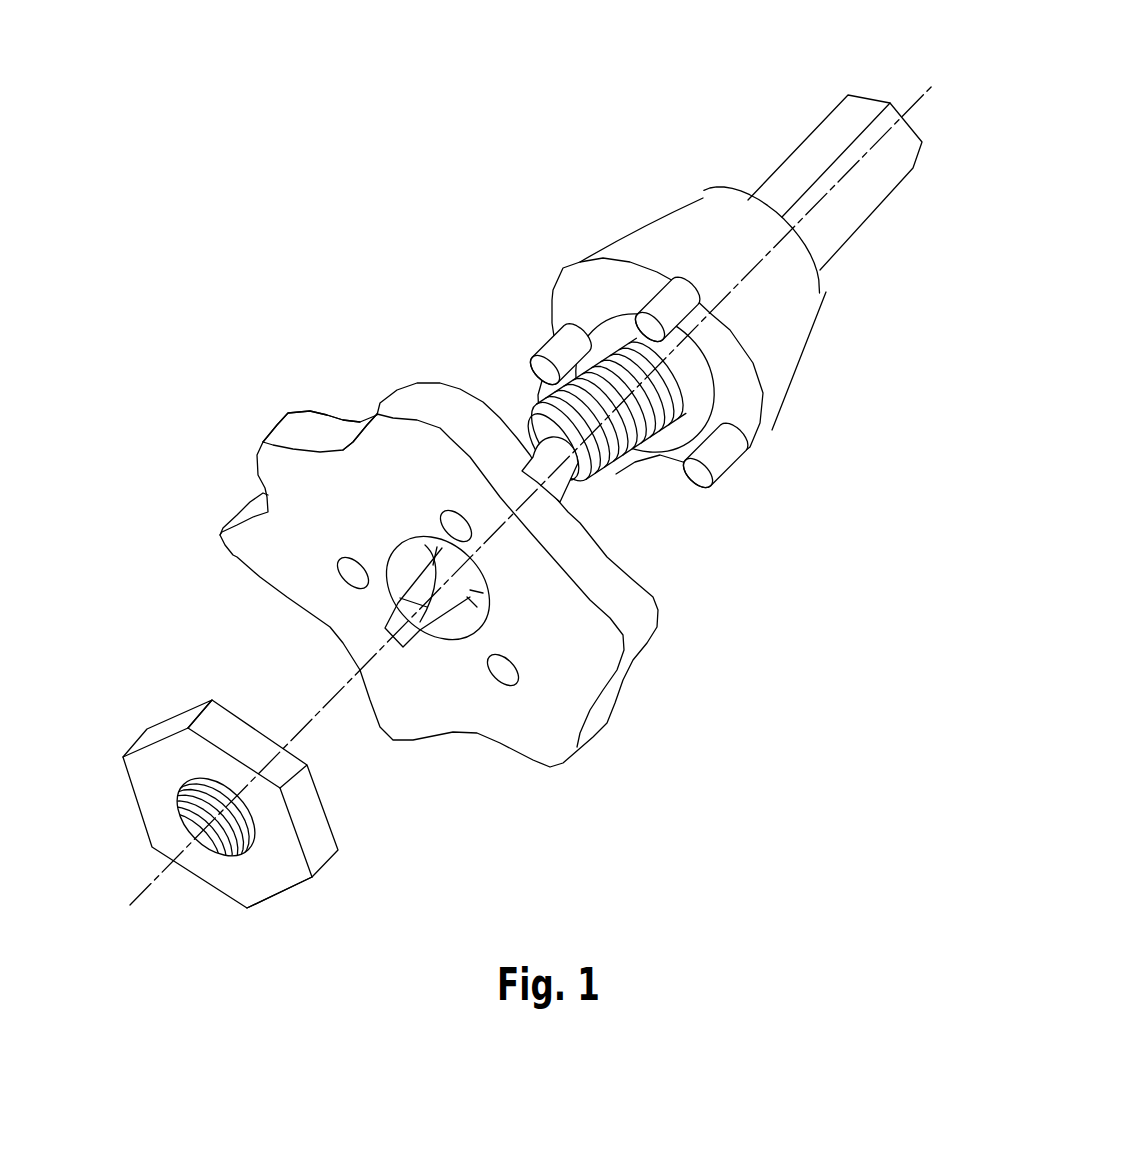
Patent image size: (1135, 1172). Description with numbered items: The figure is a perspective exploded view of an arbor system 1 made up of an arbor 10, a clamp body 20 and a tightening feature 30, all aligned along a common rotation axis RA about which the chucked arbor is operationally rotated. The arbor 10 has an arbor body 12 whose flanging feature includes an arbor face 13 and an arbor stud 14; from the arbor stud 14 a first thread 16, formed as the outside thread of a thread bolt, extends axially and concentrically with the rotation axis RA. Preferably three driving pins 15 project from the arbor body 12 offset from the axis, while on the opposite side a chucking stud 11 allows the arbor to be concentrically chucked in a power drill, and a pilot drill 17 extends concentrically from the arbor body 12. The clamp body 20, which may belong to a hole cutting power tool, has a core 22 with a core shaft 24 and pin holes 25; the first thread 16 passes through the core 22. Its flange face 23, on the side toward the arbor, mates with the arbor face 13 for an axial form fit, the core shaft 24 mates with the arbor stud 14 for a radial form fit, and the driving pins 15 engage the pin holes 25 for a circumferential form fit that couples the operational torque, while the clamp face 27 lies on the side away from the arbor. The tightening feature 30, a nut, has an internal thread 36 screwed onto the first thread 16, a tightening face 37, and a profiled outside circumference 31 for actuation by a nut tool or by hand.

The arbor system 1 is at (757, 762).
The arbor 10 is at (546, 176).
The chucking stud 11 is at (797, 152).
The arbor body 12 is at (805, 325).
The arbor face 13 is at (735, 385).
The arbor stud 14 is at (693, 388).
The driving pins 15 is at (717, 460).
The first thread 16 is at (650, 453).
The pilot drill 17 is at (570, 487).
The clamp body 20 is at (214, 417).
The core 22 is at (290, 428).
The flange face 23 is at (345, 395).
The core shaft 24 is at (467, 625).
The pin holes 25 is at (343, 573).
The clamp face 27 is at (408, 713).
The tightening feature 30 is at (81, 716).
The outside circumference 31 is at (282, 888).
The internal thread 36 is at (220, 835).
The tightening face 37 is at (172, 679).
The rotation axis RA is at (917, 97).